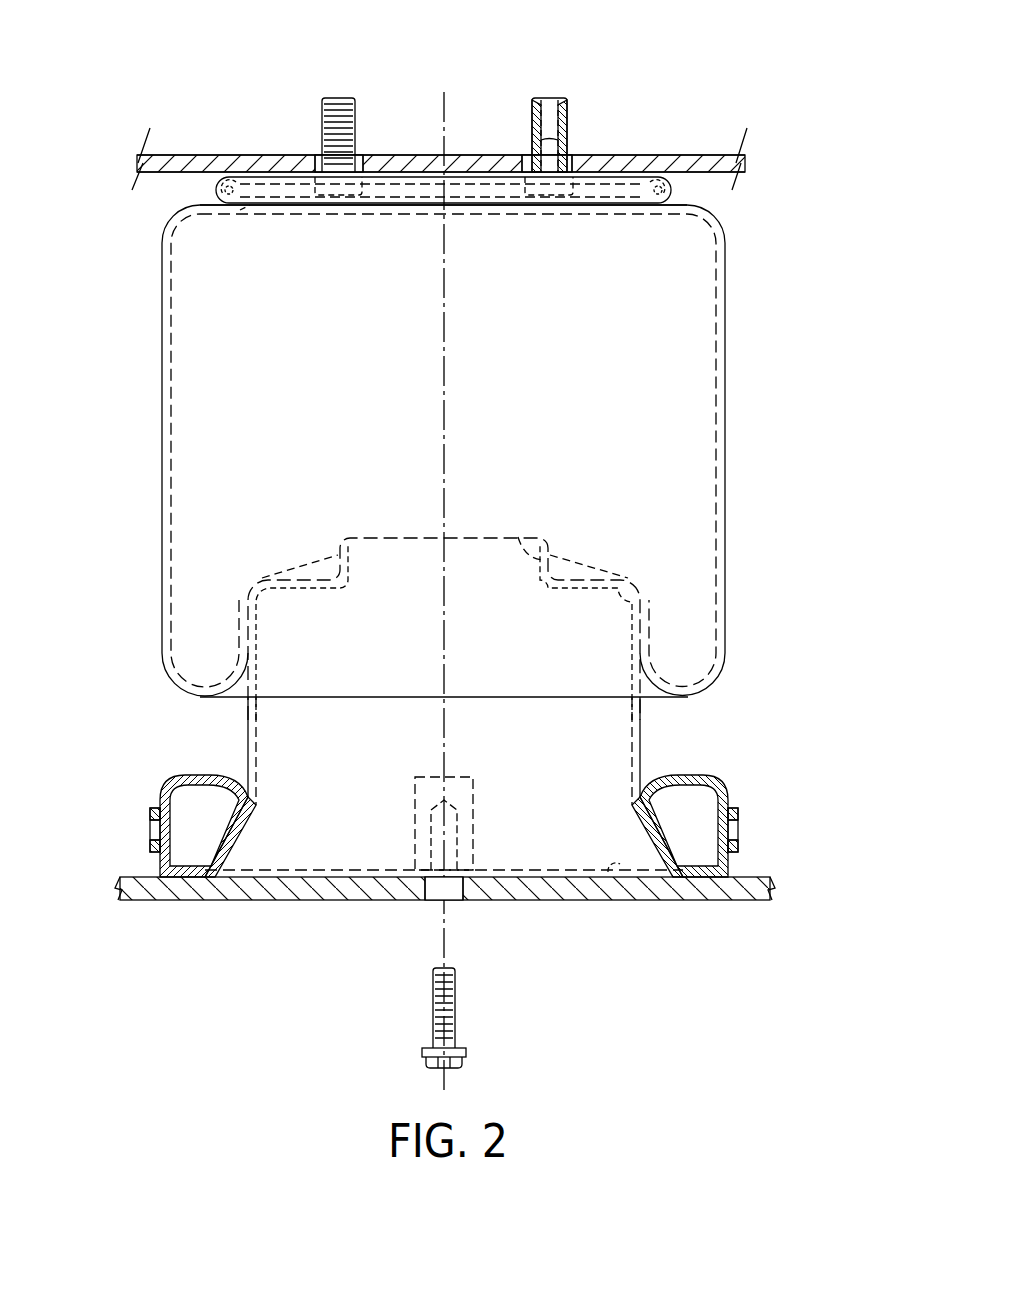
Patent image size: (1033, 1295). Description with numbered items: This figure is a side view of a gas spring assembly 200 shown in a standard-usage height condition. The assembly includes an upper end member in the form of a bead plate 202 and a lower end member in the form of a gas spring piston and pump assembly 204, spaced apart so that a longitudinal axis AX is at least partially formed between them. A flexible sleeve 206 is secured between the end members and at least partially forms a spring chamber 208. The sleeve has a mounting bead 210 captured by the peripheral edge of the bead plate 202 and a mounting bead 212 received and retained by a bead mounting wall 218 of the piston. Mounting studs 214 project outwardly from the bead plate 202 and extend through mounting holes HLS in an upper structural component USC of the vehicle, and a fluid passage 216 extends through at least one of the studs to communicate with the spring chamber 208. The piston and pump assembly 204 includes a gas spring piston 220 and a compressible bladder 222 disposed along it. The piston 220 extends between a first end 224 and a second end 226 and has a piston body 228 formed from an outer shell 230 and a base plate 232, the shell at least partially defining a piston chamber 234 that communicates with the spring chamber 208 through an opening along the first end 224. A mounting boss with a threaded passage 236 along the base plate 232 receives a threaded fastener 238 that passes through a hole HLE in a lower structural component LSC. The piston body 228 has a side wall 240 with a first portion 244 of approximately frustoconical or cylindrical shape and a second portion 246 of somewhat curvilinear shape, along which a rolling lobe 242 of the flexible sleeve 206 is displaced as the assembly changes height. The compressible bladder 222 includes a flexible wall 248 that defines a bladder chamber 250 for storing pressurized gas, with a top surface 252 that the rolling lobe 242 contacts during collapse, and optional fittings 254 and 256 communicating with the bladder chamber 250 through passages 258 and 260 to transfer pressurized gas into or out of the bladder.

The gas spring assembly 200 is at (760, 290).
The bead plate 202 is at (268, 165).
The gas spring piston and pump assembly 204 is at (150, 748).
The flexible sleeve 206 is at (735, 462).
The spring chamber 208 is at (232, 408).
The mounting bead 210 is at (635, 212).
The mounting bead 212 is at (575, 560).
The mounting studs 214 is at (357, 108).
The fluid passage 216 is at (551, 95).
The bead mounting wall 218 is at (535, 545).
The gas spring piston 220 is at (315, 820).
The compressible bladder 222 is at (462, 798).
The first end 224 is at (232, 600).
The second end 226 is at (128, 862).
The piston body 228 is at (620, 726).
The outer shell 230 is at (638, 750).
The base plate 232 is at (618, 874).
The piston chamber 234 is at (386, 605).
The threaded passage 236 is at (458, 822).
The threaded fastener 238 is at (456, 1002).
The side wall 240 is at (235, 724).
The rolling lobe 242 is at (200, 697).
The first portion 244 is at (250, 735).
The second portion 246 is at (645, 808).
The flexible wall 248 is at (700, 880).
The bladder chamber 250 is at (705, 800).
The top surface 252 is at (195, 775).
The fitting 254 is at (150, 811).
The fitting 256 is at (740, 812).
The passage 258 is at (143, 832).
The passage 260 is at (745, 832).
The longitudinal axis AX is at (447, 292).
The upper structural component USC is at (645, 160).
The lower structural component LSC is at (538, 892).
The mounting holes HLS is at (363, 160).
The hole HLE is at (425, 884).